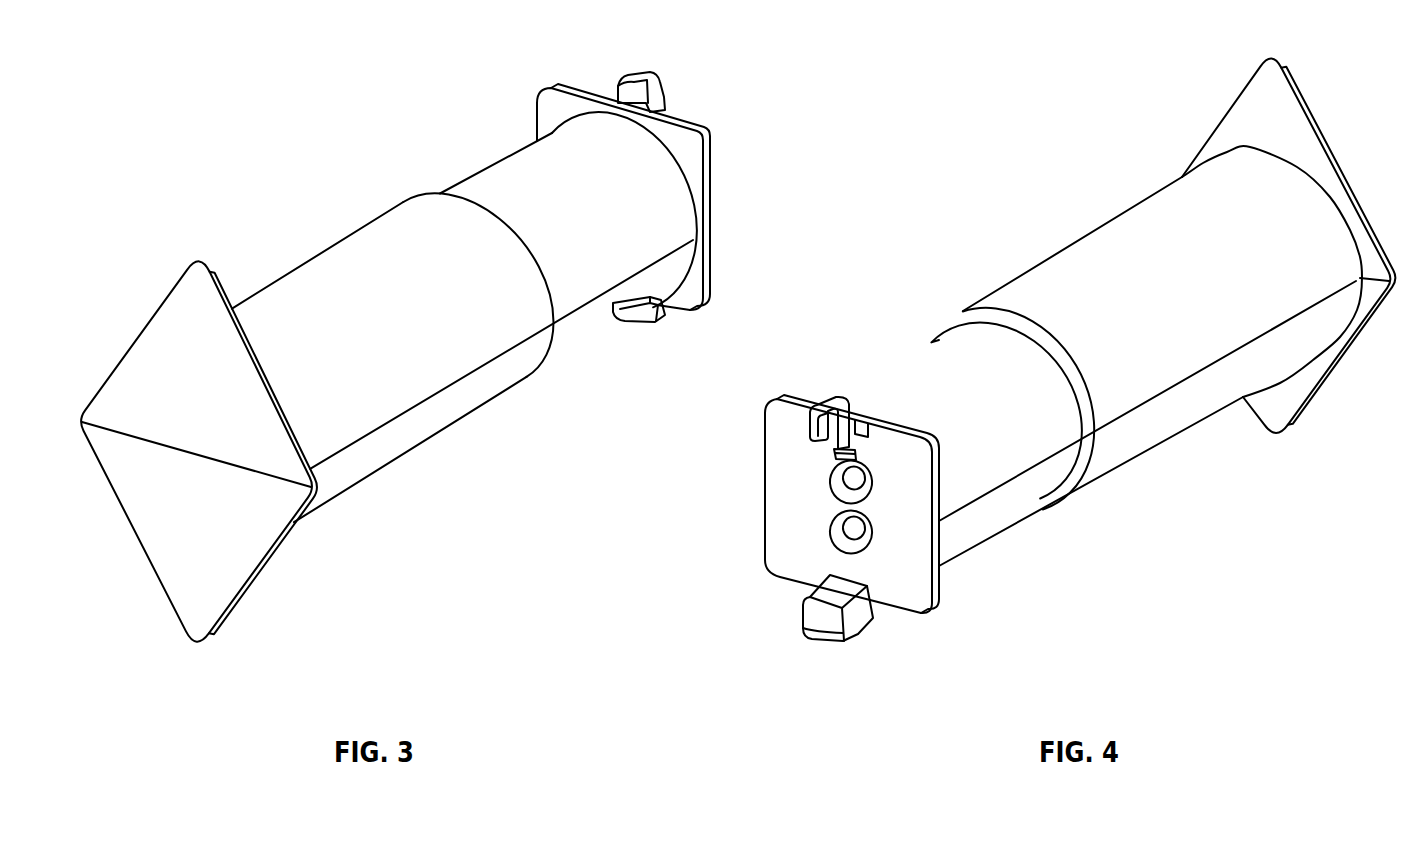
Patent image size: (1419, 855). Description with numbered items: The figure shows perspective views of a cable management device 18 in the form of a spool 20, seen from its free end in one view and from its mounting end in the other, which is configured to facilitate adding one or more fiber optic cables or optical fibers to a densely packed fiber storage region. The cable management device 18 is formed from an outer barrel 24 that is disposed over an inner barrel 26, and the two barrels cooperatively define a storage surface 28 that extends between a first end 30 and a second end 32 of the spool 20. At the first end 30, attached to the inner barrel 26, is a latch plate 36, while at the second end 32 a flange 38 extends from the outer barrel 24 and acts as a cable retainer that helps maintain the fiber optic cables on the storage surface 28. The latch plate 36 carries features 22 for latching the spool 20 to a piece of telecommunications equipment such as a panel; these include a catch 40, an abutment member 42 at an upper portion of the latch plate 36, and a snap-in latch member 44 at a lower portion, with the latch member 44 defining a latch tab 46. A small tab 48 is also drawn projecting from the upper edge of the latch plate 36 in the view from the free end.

In FIG. 3, the cable management device 18 is at (407, 174).
In FIG. 4, the cable management device 18 is at (1129, 481).
In FIG. 3, the spool 20 is at (403, 468).
In FIG. 4, the features 22 is at (800, 381).
In FIG. 3, the outer barrel 24 is at (482, 413).
In FIG. 4, the outer barrel 24 is at (1085, 230).
In FIG. 3, the inner barrel 26 is at (600, 328).
In FIG. 4, the inner barrel 26 is at (1005, 525).
In FIG. 3, the storage surface 28 is at (338, 263).
In FIG. 3, the first end 30 is at (723, 213).
In FIG. 3, the second end 32 is at (104, 355).
In FIG. 4, the second end 32 is at (1288, 246).
In FIG. 3, the latch plate 36 is at (713, 143).
In FIG. 4, the latch plate 36 is at (918, 607).
In FIG. 3, the flange 38 is at (148, 320).
In FIG. 4, the catch 40 is at (831, 387).
In FIG. 4, the abutment member 42 is at (840, 455).
In FIG. 4, the snap-in latch member 44 is at (828, 626).
In FIG. 4, the latch tab 46 is at (860, 640).
In FIG. 3, the tab 48 is at (618, 86).